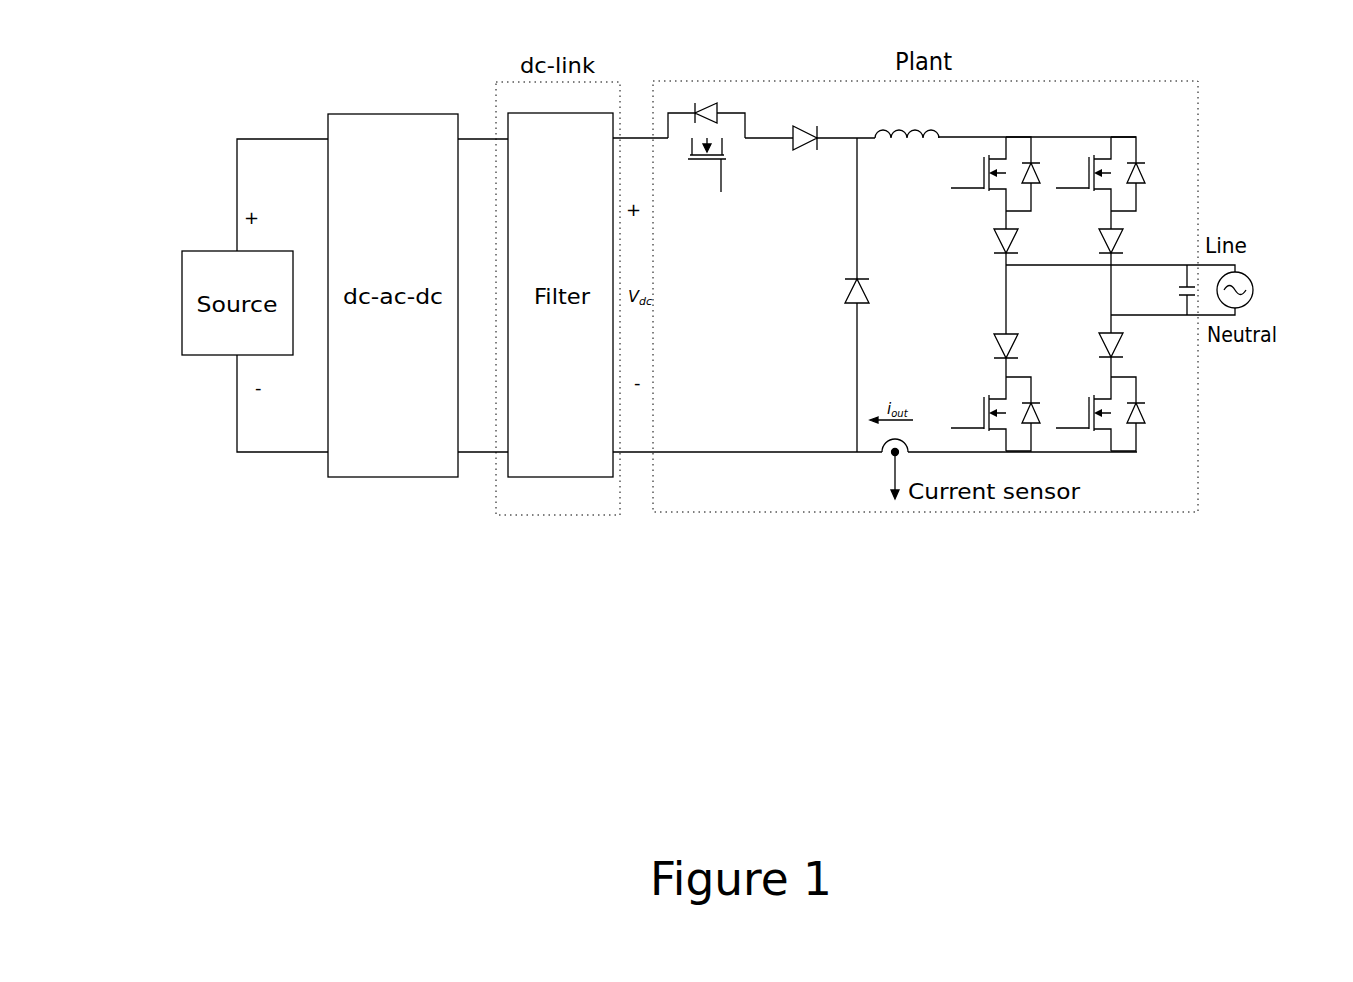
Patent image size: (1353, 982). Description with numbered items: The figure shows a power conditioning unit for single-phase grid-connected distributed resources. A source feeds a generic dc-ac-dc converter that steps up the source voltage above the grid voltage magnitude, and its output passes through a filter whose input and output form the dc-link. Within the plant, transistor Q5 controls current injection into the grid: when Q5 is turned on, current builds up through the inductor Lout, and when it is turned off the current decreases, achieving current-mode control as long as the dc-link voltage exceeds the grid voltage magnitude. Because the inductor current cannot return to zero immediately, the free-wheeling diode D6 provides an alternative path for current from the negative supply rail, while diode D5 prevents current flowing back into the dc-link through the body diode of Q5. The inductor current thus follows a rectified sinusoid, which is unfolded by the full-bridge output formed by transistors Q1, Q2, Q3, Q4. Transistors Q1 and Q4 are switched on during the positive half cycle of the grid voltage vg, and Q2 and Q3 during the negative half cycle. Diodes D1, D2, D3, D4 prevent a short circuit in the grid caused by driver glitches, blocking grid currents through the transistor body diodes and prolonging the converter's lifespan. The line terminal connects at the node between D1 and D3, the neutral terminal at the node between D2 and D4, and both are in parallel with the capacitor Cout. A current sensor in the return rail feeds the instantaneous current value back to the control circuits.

The transistor Q1 is at (994, 174).
The transistor Q2 is at (1116, 174).
The transistor Q3 is at (994, 414).
The transistor Q4 is at (1119, 414).
The transistor Q5 is at (705, 147).
The diode D1 is at (985, 243).
The diode D2 is at (1133, 243).
The diode D3 is at (985, 346).
The diode D4 is at (1133, 346).
The diode D5 is at (802, 159).
The free-wheeling diode D6 is at (836, 295).
The inductor Lout is at (907, 154).
The capacitor Cout is at (1165, 290).
The grid voltage vg is at (1254, 293).